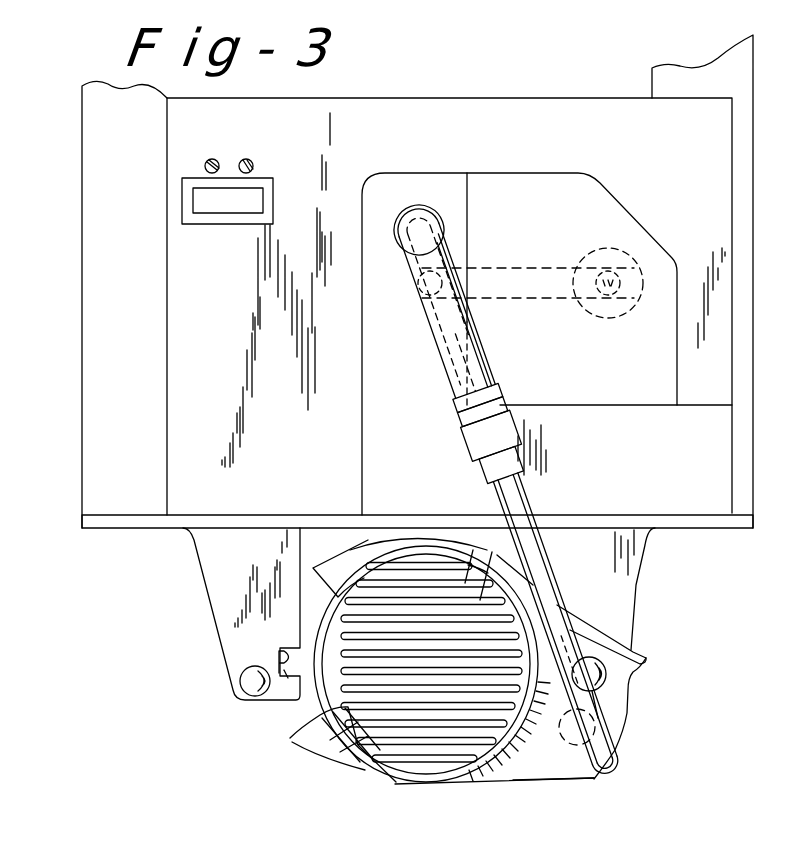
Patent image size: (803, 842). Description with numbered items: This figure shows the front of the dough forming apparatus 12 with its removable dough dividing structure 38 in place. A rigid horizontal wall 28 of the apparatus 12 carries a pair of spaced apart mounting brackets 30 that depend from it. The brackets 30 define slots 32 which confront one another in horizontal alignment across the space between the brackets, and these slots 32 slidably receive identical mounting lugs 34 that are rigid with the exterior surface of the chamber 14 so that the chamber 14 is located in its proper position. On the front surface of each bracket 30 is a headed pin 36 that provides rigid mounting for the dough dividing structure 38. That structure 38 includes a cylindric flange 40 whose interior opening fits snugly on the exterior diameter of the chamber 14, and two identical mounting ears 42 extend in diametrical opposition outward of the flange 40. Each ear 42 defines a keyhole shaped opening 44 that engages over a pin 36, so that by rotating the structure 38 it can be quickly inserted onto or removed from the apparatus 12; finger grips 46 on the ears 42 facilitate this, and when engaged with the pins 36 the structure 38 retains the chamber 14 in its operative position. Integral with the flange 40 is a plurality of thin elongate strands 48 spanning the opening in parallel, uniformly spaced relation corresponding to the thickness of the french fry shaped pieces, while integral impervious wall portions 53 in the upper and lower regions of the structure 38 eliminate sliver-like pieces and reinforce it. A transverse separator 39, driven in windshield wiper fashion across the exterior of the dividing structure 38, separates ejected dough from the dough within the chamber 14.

The apparatus 12 is at (76, 430).
The chamber 14 is at (318, 616).
The rigid horizontal wall 28 is at (121, 527).
The mounting brackets 30 is at (200, 578).
The slots 32 is at (278, 655).
The mounting lugs 34 is at (285, 686).
The headed pin 36 is at (240, 681).
The dough dividing structure 38 is at (537, 782).
The transverse separator 39 is at (536, 497).
The cylindric flange 40 is at (490, 757).
The mounting ears 42 is at (637, 690).
The keyhole shaped openings 44 is at (573, 740).
The finger grips 46 is at (647, 651).
The strands 48 is at (485, 598).
The impervious wall portions 53 is at (383, 550).